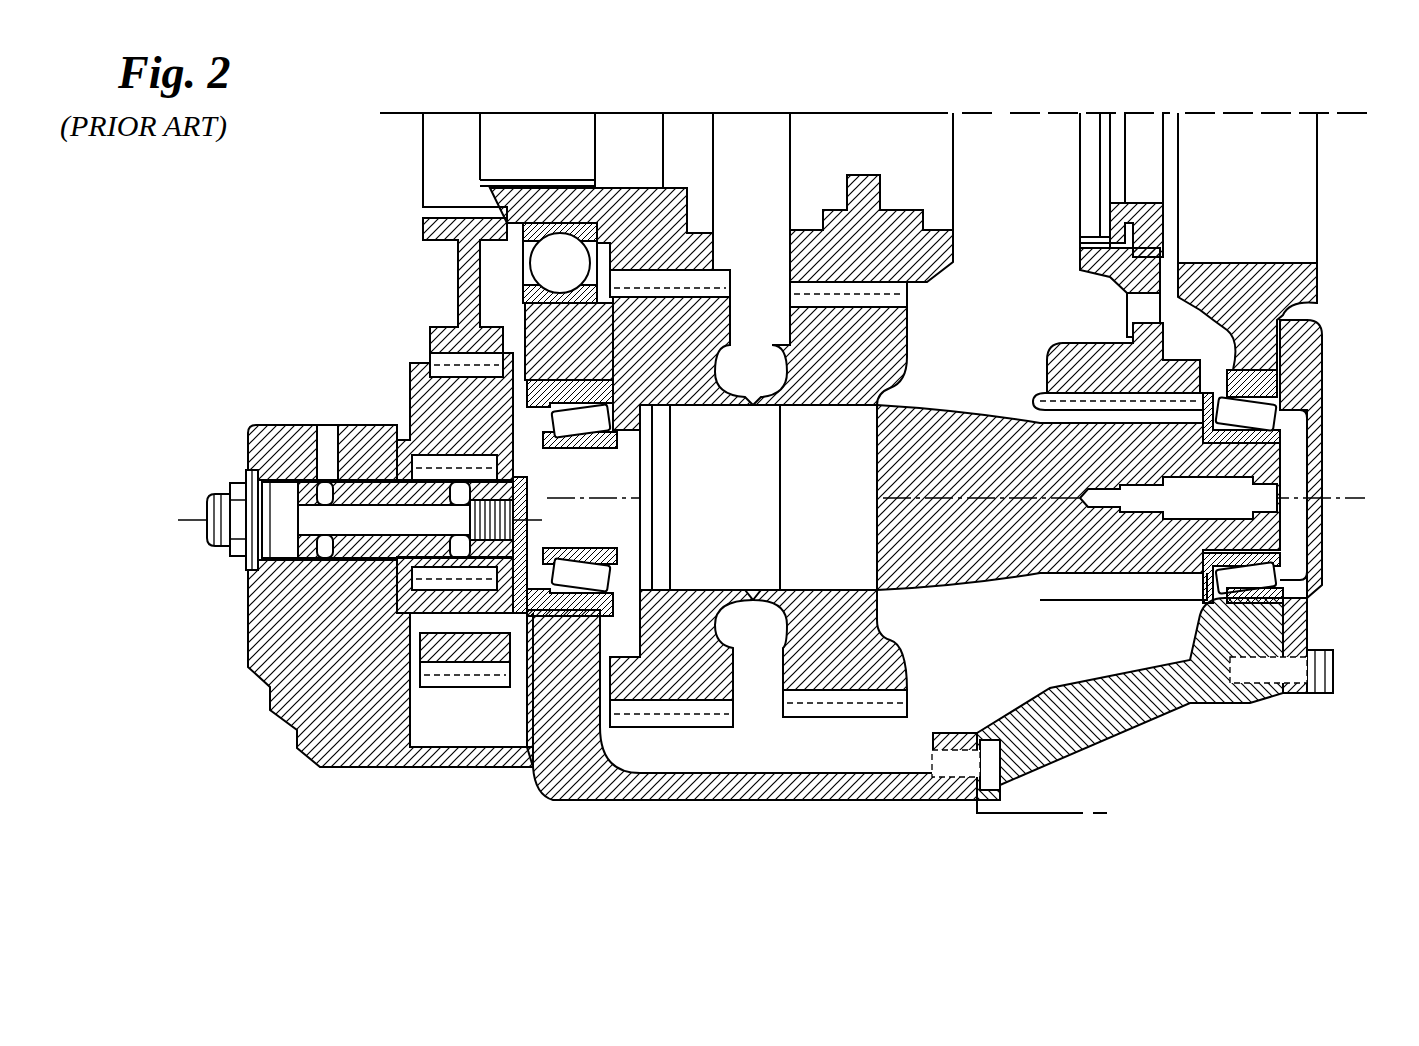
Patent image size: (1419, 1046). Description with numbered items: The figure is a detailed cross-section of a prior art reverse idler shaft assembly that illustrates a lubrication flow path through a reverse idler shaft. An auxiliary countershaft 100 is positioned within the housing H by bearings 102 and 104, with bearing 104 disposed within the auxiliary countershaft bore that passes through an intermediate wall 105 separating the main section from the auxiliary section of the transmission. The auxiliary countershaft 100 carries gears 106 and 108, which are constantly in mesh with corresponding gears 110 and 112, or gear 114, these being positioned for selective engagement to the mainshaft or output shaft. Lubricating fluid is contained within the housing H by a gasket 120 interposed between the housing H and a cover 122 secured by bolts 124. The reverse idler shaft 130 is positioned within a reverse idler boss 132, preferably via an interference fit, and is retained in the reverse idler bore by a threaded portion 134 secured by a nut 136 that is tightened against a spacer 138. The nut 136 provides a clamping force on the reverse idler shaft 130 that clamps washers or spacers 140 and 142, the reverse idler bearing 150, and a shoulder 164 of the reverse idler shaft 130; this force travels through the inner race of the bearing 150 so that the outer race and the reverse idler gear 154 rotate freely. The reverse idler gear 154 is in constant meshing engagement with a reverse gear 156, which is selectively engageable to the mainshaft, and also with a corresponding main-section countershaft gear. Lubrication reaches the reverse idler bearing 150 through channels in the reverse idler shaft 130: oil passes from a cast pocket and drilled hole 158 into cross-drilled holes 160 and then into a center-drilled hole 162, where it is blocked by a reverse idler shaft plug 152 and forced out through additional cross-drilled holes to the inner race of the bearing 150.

The housing H is at (657, 802).
The auxiliary countershaft 100 is at (1010, 595).
The bearing 102 is at (1267, 393).
The bearing 104 is at (418, 682).
The intermediate wall 105 is at (513, 718).
The gear 106 is at (720, 732).
The gear 108 is at (817, 722).
The gear 110 is at (713, 233).
The gear 112 is at (958, 243).
The gear 114 is at (1082, 248).
The gasket 120 is at (1283, 698).
The cover 122 is at (1335, 588).
The bolts 124 is at (1337, 675).
The reverse idler shaft 130 is at (302, 423).
The reverse idler boss 132 is at (422, 718).
The threaded portion 134 is at (205, 504).
The nut 136 is at (226, 480).
The spacer 138 is at (240, 570).
The washer or spacer 140 is at (455, 443).
The washer or spacer 142 is at (390, 605).
The reverse idler bearing 150 is at (500, 432).
The reverse idler shaft plug 152 is at (470, 506).
The reverse idler gear 154 is at (400, 717).
The reverse gear 156 is at (456, 278).
The cast pocket and drilled hole 158 is at (331, 423).
The cross-drilled holes 160 is at (295, 588).
The center-drilled hole 162 is at (380, 507).
The shoulder 164 is at (533, 473).